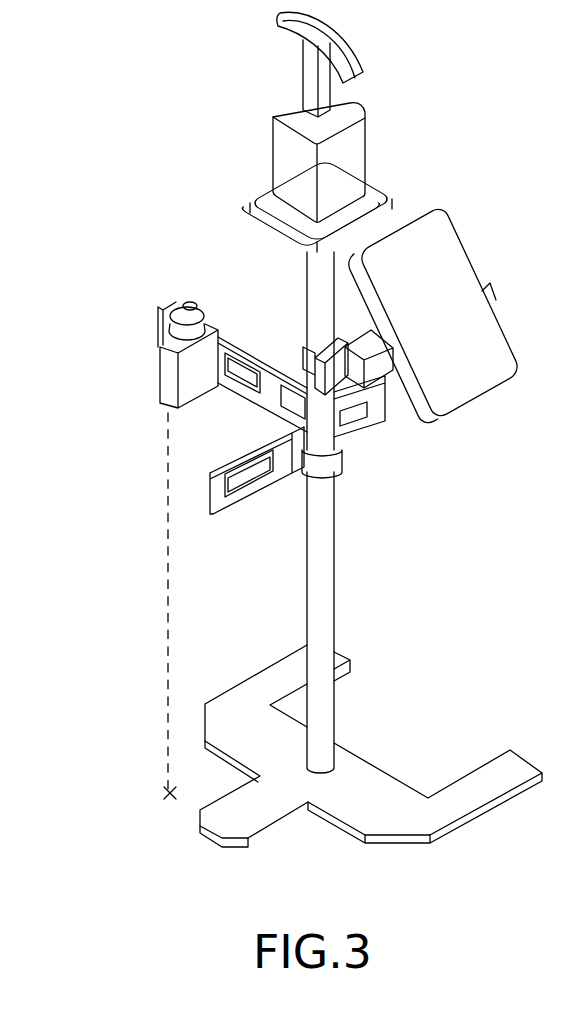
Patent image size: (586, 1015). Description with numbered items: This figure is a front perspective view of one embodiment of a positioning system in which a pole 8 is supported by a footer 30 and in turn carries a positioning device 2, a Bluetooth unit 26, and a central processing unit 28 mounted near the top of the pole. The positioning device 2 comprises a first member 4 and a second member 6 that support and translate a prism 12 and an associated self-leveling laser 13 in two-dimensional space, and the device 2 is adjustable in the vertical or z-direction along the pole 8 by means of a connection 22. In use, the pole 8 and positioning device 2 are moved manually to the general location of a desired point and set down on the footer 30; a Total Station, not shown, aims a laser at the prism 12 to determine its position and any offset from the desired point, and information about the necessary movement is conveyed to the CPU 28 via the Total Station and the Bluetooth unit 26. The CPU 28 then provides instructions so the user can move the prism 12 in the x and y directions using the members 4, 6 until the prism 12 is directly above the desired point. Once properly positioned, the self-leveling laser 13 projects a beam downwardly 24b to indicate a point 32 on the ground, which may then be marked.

The positioning device 2 is at (98, 425).
The first member 4 is at (220, 502).
The second member 6 is at (232, 345).
The pole 8 is at (337, 600).
The prism 12 is at (190, 302).
The self-leveling laser 13 is at (160, 373).
The connection 22 is at (342, 458).
The downward laser beam 24b is at (169, 561).
The Bluetooth unit 26 is at (358, 157).
The central processing unit 28 is at (497, 377).
The footer 30 is at (400, 830).
The point 32 is at (170, 793).